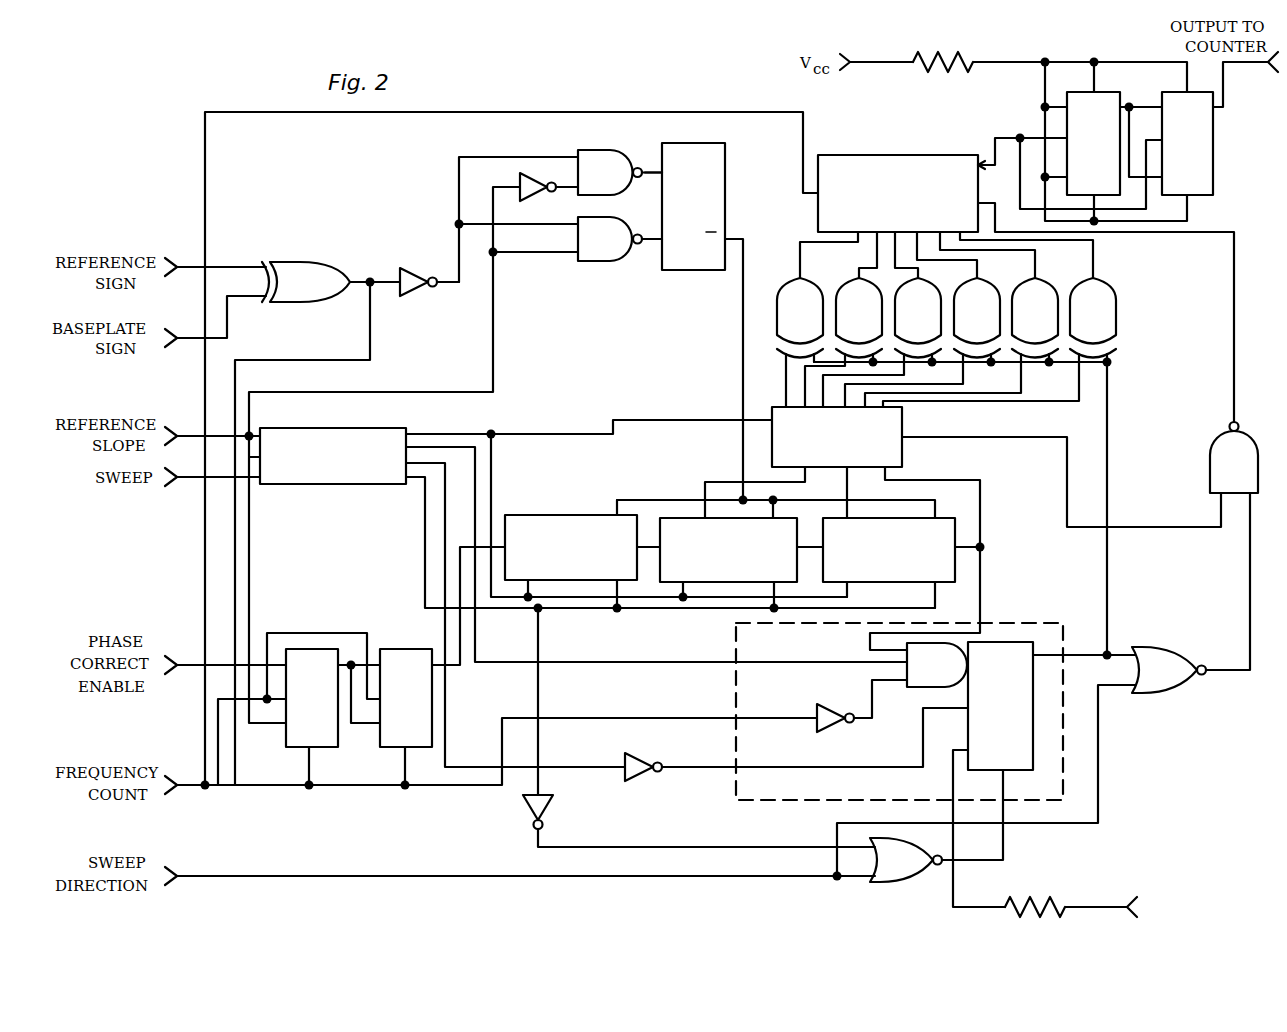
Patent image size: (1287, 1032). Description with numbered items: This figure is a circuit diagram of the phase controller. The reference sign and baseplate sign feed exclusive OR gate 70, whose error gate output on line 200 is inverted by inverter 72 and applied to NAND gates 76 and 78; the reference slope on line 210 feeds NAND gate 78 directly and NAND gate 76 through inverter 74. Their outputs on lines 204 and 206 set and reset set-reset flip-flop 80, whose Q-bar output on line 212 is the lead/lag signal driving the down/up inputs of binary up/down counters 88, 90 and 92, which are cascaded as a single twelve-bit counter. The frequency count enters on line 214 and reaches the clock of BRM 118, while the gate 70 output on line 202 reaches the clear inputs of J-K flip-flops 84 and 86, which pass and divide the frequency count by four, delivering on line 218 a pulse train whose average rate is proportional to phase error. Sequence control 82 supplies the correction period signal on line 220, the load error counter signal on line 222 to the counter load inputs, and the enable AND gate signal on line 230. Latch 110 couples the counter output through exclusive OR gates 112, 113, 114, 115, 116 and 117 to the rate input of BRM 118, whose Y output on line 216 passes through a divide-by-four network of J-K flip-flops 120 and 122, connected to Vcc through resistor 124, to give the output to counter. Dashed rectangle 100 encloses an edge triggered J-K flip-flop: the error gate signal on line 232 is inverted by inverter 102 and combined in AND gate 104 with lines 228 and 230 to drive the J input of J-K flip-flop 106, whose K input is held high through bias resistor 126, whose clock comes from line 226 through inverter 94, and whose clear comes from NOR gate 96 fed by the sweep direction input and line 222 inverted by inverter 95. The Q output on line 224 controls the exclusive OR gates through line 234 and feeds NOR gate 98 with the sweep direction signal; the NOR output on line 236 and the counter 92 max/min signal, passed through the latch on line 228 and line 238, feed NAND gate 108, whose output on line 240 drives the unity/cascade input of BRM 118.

The exclusive OR gate 70 is at (306, 266).
The inverter 72 is at (416, 270).
The inverter 74 is at (525, 194).
The NAND gate 76 is at (600, 152).
The NAND gate 78 is at (612, 262).
The set-reset flip-flop 80 is at (678, 272).
The sequence control 82 is at (292, 428).
The J-K flip-flop 84 is at (294, 750).
The J-K flip-flop 86 is at (390, 750).
The binary up/down counter 88 is at (585, 515).
The binary up/down counter 90 is at (718, 585).
The binary up/down counter 92 is at (948, 582).
The inverter 94 is at (643, 755).
The inverter 95 is at (548, 801).
The NOR gate 96 is at (890, 882).
The NOR gate 98 is at (1160, 650).
The edge triggered J-K flip-flop 100 is at (768, 800).
The inverter 102 is at (818, 708).
The AND gate 104 is at (925, 688).
The J-K flip-flop 106 is at (1036, 762).
The NAND gate 108 is at (1210, 478).
The latch 110 is at (902, 447).
The exclusive OR gate 112 is at (817, 319).
The exclusive OR gate 113 is at (844, 319).
The exclusive OR gate 114 is at (882, 319).
The exclusive OR gate 115 is at (923, 319).
The exclusive OR gate 116 is at (962, 319).
The exclusive OR gate 117 is at (1000, 319).
The BRM 118 is at (892, 155).
The J-K flip-flop 120 is at (1067, 128).
The J-K flip-flop 122 is at (1205, 160).
The resistor 124 is at (920, 72).
The bias resistor 126 is at (1040, 900).
The line 200 is at (388, 280).
The line 202 is at (371, 316).
The line 204 is at (656, 170).
The line 206 is at (655, 243).
The line 210 is at (493, 315).
The line 212 is at (742, 375).
The line 214 is at (205, 582).
The line 216 is at (993, 157).
The line 218 is at (460, 663).
The line 220 is at (442, 434).
The line 222 is at (425, 545).
The line 224 is at (1083, 652).
The line 226 is at (445, 632).
The line 228 is at (980, 547).
The line 230 is at (670, 662).
The line 232 is at (670, 718).
The line 234 is at (1115, 387).
The line 236 is at (1250, 607).
The line 238 is at (1153, 527).
The line 240 is at (1234, 348).